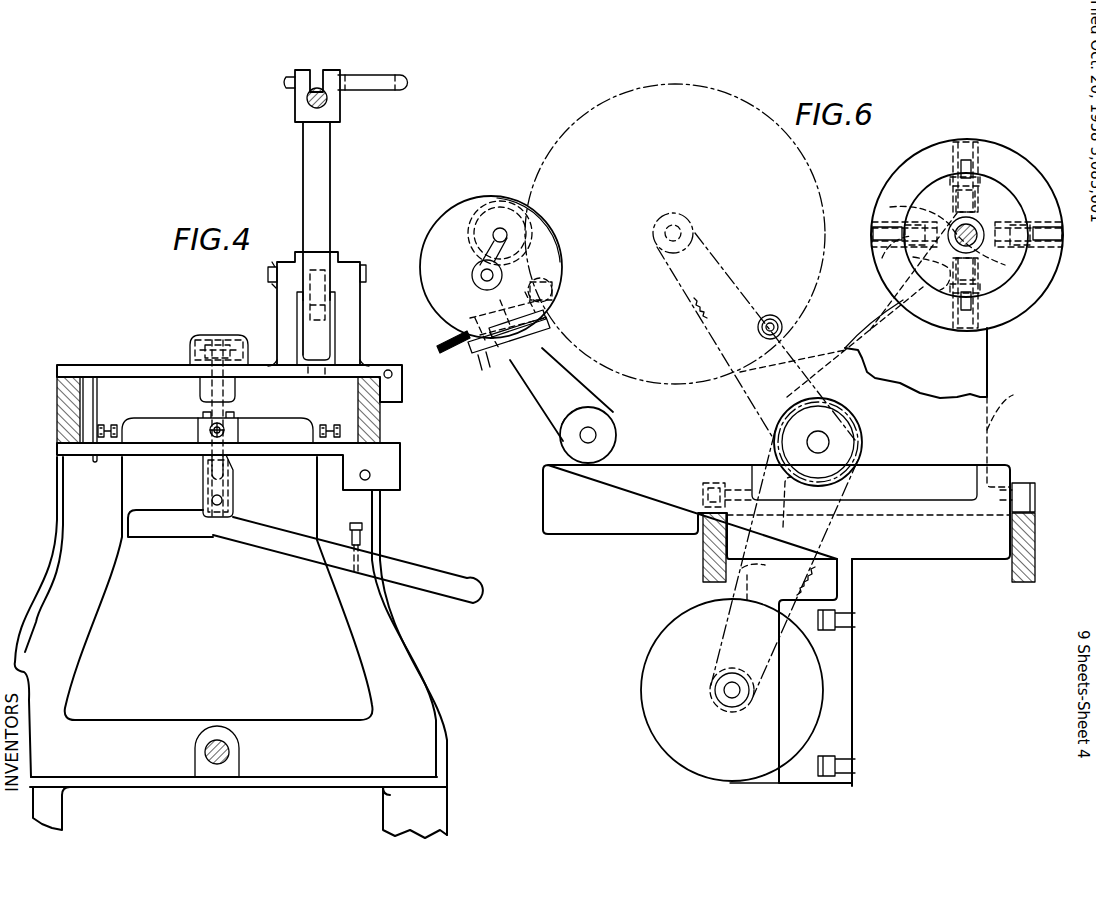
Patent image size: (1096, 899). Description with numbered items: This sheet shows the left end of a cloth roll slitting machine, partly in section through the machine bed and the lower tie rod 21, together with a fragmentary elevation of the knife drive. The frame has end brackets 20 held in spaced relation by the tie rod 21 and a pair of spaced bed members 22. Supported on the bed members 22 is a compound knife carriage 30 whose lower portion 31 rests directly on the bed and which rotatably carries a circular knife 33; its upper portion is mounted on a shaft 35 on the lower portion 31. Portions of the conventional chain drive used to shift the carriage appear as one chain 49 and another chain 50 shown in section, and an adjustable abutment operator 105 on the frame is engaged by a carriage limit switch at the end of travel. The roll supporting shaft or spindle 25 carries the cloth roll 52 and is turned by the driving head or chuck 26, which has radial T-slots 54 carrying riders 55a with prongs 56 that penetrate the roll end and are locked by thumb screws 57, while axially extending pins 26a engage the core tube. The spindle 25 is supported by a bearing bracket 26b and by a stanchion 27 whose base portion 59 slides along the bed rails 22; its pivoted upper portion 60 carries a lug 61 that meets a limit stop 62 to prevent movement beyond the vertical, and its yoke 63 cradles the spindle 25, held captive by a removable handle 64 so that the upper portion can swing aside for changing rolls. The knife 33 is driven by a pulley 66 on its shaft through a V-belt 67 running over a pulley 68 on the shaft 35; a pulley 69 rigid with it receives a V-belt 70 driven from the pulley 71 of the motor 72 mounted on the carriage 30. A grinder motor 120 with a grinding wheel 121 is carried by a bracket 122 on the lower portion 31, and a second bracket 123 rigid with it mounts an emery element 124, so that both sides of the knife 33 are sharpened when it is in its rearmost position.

In FIG. 4, the end brackets 20 is at (108, 597).
In FIG. 4, the tie rod 21 is at (229, 751).
In FIG. 4, the bed members 22 is at (57, 405).
In FIG. 6, the bed members 22 is at (710, 557).
In FIG. 4, the roll supporting shaft 25 is at (306, 102).
In FIG. 6, the roll supporting shaft 25 is at (977, 250).
In FIG. 6, the driving head 26 is at (1023, 313).
In FIG. 6, the axially extending pins 26a is at (947, 217).
In FIG. 6, the bearing bracket 26b is at (993, 390).
In FIG. 4, the stanchion 27 is at (332, 187).
In FIG. 6, the compound knife carriage 30 is at (668, 459).
In FIG. 6, the lower portion 31 is at (921, 564).
In FIG. 6, the rotary knife 33 is at (535, 170).
In FIG. 6, the shaft 35 is at (830, 442).
In FIG. 4, the chain 49 is at (108, 424).
In FIG. 4, the chain 50 is at (325, 424).
In FIG. 6, the cloth roll 52 is at (927, 185).
In FIG. 6, the radial T-slots 54 is at (962, 145).
In FIG. 6, the washer 55a is at (973, 160).
In FIG. 6, the prongs 56 is at (973, 167).
In FIG. 6, the thumb screws 57 is at (1013, 217).
In FIG. 4, the base portion 59 is at (360, 326).
In FIG. 4, the upper portion 60 is at (330, 168).
In FIG. 4, the lug 61 is at (325, 288).
In FIG. 4, the limit stop 62 is at (305, 320).
In FIG. 4, the yoke 63 is at (343, 109).
In FIG. 4, the handle 64 is at (408, 82).
In FIG. 6, the pulley 66 is at (688, 254).
In FIG. 6, the V-belt 67 is at (705, 302).
In FIG. 6, the pulley 68 is at (795, 415).
In FIG. 6, the pulley 69 is at (778, 512).
In FIG. 6, the V-belt 70 is at (797, 577).
In FIG. 6, the pulley 71 is at (738, 671).
In FIG. 6, the motor 72 is at (687, 631).
In FIG. 4, the adjustable abutment operator 105 is at (370, 472).
In FIG. 6, the grinder motor 120 is at (435, 253).
In FIG. 6, the grinding wheel 121 is at (488, 203).
In FIG. 6, the bracket 122 is at (527, 381).
In FIG. 6, the second bracket 123 is at (527, 401).
In FIG. 6, the emery element 124 is at (557, 280).